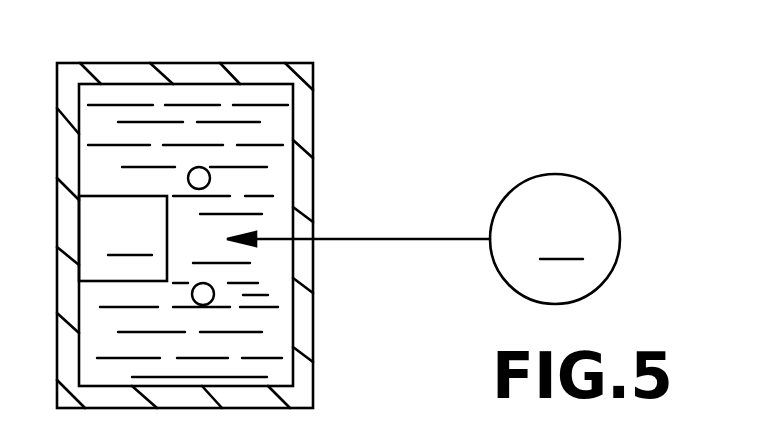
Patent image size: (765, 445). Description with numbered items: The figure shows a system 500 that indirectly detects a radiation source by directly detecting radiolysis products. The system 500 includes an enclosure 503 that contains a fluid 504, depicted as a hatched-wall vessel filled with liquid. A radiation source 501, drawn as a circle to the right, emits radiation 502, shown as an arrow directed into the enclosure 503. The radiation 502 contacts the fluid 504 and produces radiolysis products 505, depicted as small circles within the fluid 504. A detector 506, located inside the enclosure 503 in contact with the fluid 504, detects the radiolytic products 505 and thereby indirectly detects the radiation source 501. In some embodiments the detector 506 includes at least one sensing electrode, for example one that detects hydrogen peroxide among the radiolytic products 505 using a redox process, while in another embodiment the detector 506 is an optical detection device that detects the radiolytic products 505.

The system 500 is at (338, 206).
The radiation source 501 is at (555, 239).
The radiation 502 is at (378, 238).
The enclosure 503 is at (257, 63).
The fluid 504 is at (130, 105).
The radiolysis products 505 is at (210, 178).
The detector 506 is at (123, 238).